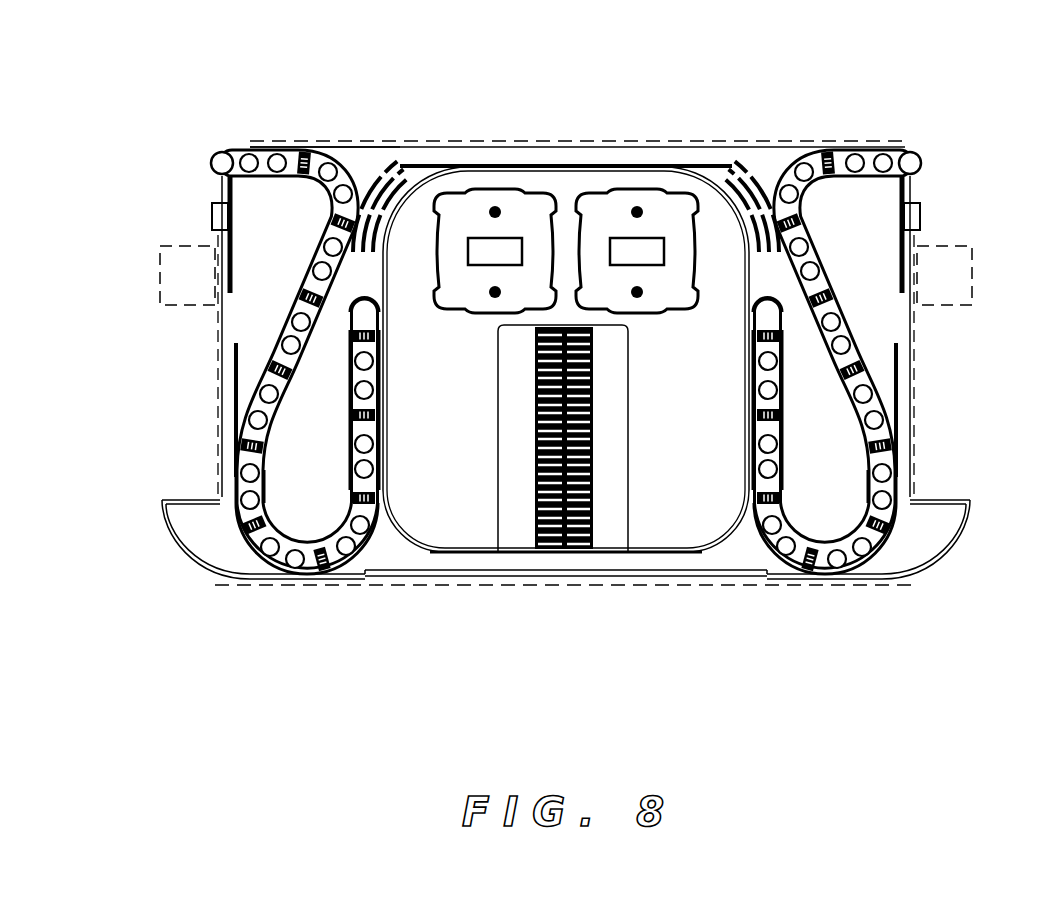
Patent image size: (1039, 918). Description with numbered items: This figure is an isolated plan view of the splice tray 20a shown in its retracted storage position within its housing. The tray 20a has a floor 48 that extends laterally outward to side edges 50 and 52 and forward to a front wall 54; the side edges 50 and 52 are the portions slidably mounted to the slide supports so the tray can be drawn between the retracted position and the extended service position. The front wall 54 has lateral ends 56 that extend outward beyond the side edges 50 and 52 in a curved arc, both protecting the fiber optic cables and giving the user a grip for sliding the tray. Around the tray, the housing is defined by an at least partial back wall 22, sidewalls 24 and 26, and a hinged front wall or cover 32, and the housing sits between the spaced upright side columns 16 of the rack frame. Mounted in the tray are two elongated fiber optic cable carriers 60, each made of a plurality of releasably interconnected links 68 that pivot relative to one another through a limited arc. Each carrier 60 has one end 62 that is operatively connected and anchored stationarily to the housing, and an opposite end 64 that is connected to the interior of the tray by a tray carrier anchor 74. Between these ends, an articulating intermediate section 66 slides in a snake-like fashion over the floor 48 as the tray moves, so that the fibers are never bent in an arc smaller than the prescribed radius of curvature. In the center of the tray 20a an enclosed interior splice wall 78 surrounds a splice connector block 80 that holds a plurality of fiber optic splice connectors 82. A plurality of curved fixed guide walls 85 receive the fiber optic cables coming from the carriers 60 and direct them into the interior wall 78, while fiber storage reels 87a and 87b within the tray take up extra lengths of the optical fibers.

The splice tray 20a is at (682, 128).
The floor 48 is at (346, 158).
The curved fixed guide walls 85 is at (426, 192).
The fiber storage reel 87a is at (494, 196).
The fiber storage reel 87b is at (617, 200).
The back wall 22 is at (768, 140).
The one end of carrier 62 is at (216, 155).
The upright side columns 16 is at (161, 246).
The fiber optic cable carrier 60 is at (300, 268).
The tray carrier anchor 74 is at (378, 298).
The opposite end of carrier 64 is at (380, 343).
The fiber optic splice connectors 82 is at (596, 347).
The splice connector block 80 is at (623, 463).
The side edge 50 is at (221, 333).
The sidewall 26 is at (217, 375).
The side edge 52 is at (913, 360).
The sidewall 24 is at (918, 423).
The links 68 is at (256, 487).
The lateral ends 56 is at (188, 556).
The articulating intermediate section 66 is at (264, 547).
The front wall 54 is at (552, 580).
The interior splice wall 78 is at (682, 553).
The hinged front wall or cover 32 is at (733, 587).